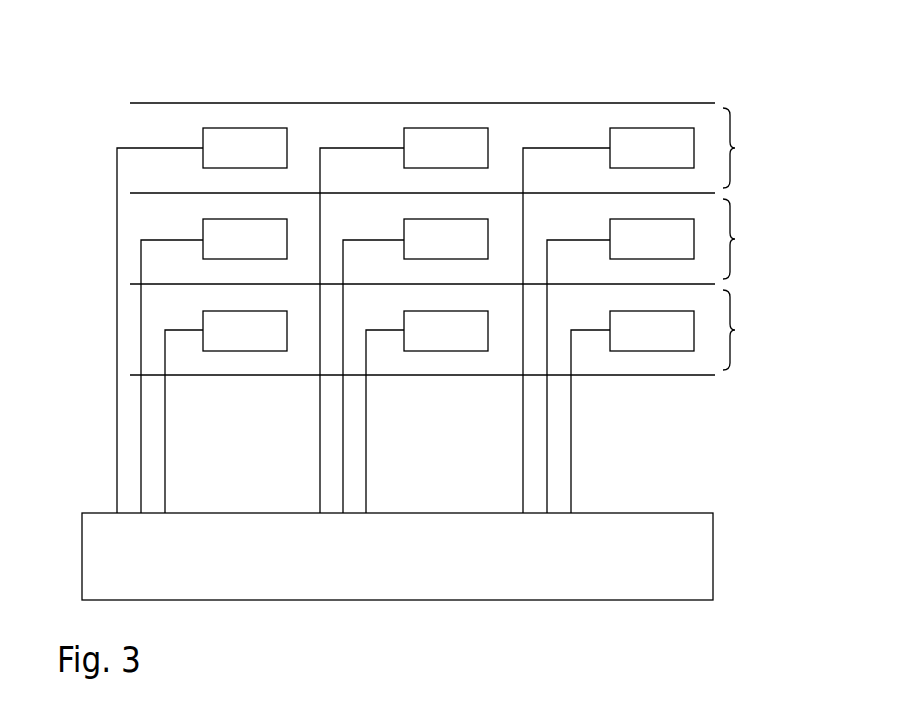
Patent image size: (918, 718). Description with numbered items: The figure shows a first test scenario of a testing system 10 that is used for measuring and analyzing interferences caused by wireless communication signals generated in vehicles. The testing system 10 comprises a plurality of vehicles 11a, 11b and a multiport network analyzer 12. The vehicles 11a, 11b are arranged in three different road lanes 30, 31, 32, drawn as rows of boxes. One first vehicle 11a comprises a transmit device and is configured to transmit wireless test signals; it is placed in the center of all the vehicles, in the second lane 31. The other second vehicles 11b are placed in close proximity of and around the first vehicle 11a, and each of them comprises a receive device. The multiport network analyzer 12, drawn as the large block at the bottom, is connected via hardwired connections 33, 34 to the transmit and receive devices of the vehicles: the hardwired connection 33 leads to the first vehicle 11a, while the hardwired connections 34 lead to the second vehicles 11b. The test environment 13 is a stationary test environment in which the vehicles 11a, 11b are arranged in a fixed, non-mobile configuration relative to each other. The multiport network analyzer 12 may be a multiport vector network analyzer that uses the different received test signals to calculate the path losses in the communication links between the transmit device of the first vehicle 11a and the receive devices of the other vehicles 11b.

The testing system 10 is at (735, 58).
The test environment 13 is at (110, 85).
The first vehicle 11a is at (446, 239).
The second vehicles 11b is at (448, 239).
The multiport network analyzer 12 is at (715, 558).
The first road lane 30 is at (741, 148).
The second road lane 31 is at (741, 239).
The third road lane 32 is at (741, 330).
The hardwired connection 33 is at (343, 422).
The hardwired connections 34 is at (165, 480).